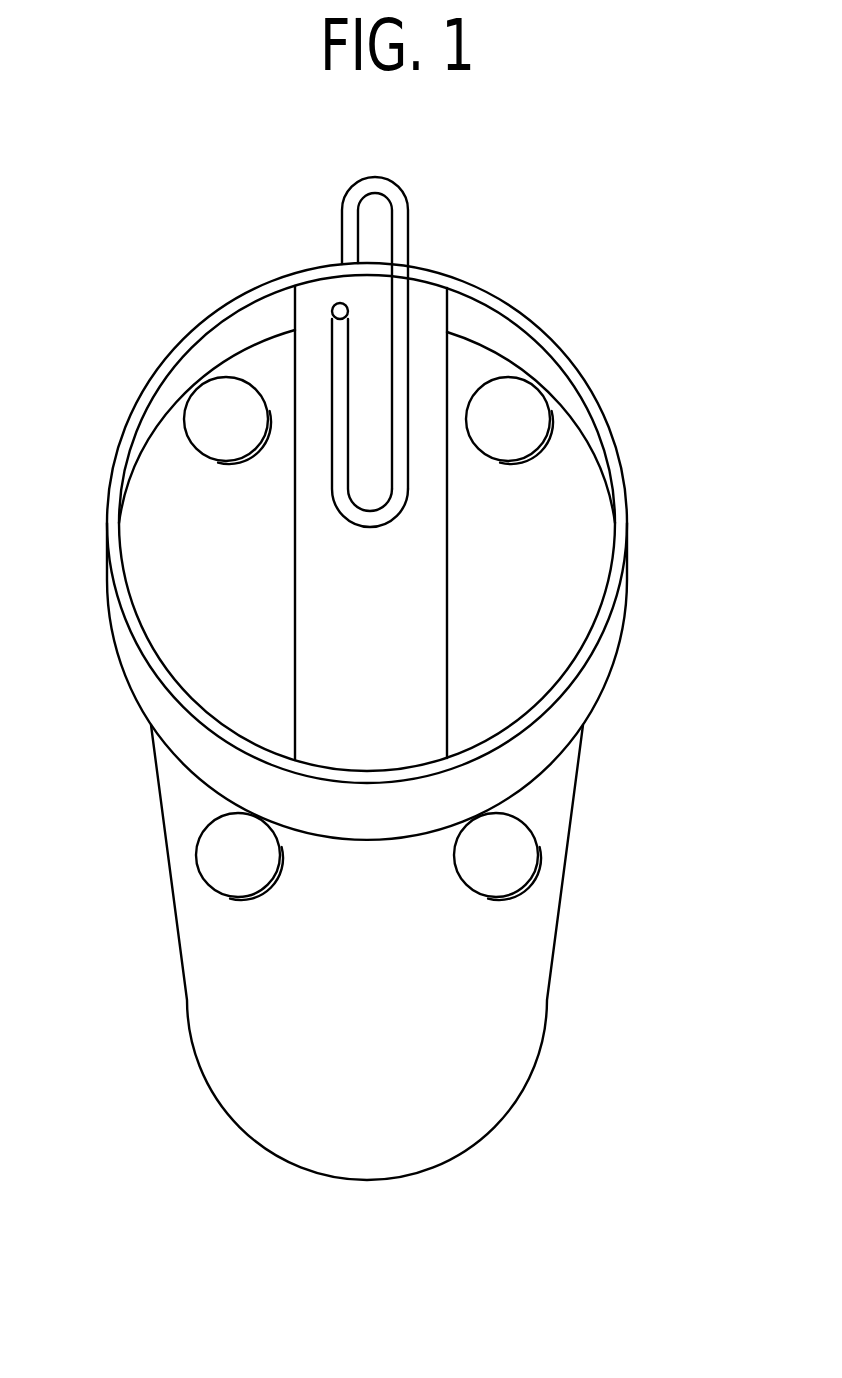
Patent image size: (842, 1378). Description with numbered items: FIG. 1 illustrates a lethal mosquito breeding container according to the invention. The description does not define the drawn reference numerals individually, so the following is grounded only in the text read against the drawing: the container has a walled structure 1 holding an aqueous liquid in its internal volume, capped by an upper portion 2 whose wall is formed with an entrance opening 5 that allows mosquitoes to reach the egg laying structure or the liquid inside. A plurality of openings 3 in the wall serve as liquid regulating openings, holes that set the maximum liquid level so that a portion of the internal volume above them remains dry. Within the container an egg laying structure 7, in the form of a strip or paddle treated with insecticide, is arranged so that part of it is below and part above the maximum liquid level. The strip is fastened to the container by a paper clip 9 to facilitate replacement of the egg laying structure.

The container body 1 is at (440, 1057).
The cap 2 is at (530, 578).
The openings 3 is at (223, 387).
The inner surface of cap 5 is at (580, 520).
The central bar with slot 7 is at (433, 352).
The loop 9 is at (410, 242).